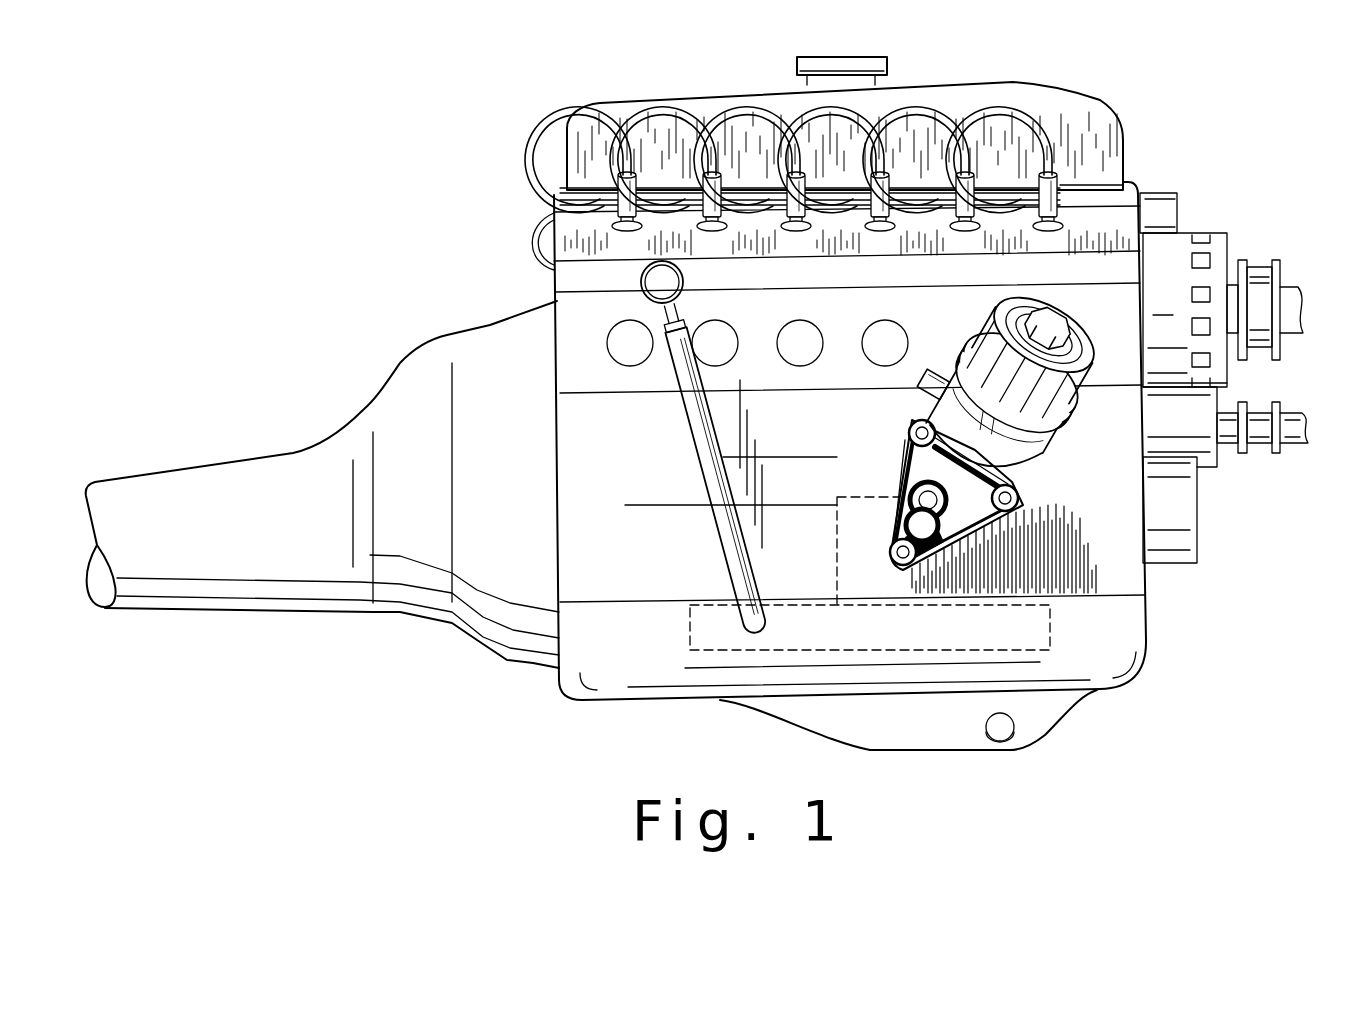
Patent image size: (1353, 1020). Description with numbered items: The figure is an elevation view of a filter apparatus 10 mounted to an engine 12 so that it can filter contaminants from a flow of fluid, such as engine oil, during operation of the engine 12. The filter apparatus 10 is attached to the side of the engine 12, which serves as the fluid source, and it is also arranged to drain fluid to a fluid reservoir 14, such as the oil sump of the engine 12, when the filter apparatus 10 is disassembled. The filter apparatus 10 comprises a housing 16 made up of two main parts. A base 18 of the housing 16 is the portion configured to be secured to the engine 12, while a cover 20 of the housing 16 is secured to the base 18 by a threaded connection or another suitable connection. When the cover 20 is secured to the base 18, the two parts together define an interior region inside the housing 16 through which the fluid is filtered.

The filter apparatus 10 is at (1097, 304).
The engine 12 is at (1096, 110).
The fluid reservoir 14 is at (690, 632).
The housing 16 is at (1097, 392).
The base 18 is at (923, 403).
The cover 20 is at (1000, 298).